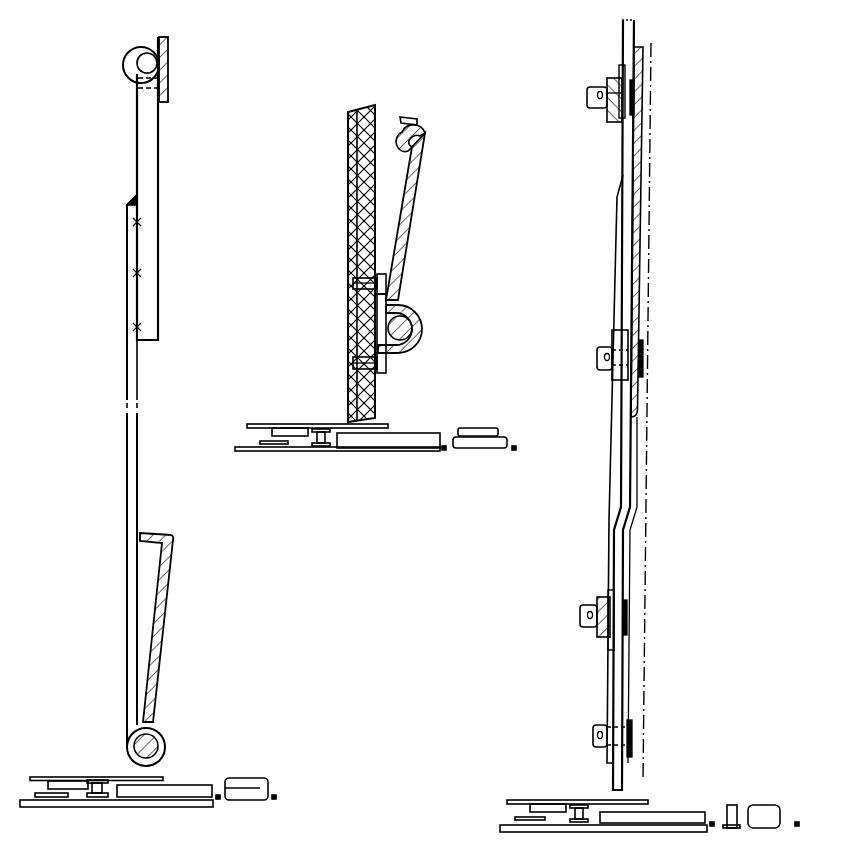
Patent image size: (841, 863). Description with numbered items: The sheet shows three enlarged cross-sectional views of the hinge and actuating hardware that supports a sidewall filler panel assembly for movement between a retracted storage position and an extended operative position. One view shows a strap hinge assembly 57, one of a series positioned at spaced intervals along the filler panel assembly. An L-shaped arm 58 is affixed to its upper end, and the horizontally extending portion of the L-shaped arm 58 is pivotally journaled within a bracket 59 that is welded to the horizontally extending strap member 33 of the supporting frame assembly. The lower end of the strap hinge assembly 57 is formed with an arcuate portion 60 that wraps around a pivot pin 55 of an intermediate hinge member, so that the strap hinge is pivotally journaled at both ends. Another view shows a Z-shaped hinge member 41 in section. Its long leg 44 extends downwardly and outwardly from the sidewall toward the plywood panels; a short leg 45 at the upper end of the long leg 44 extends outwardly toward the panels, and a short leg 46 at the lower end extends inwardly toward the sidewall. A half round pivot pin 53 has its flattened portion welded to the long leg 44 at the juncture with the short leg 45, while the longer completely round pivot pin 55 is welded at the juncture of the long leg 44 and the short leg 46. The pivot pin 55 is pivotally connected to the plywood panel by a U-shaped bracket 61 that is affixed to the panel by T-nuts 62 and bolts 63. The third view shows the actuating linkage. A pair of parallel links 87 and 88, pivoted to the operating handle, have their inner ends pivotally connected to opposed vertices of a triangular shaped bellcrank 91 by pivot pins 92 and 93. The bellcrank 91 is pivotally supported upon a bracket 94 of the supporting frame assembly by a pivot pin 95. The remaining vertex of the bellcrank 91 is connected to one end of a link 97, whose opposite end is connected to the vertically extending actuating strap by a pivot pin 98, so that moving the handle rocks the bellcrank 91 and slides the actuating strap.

In FIG. 6, the strap member 33 is at (168, 62).
In FIG. 6, the bracket 59 is at (129, 67).
In FIG. 6, the L-shaped arm 58 is at (148, 147).
In FIG. 6, the strap hinge assembly 57 is at (128, 380).
In FIG. 6, the arcuate portion 60 is at (158, 732).
In FIG. 6, the pivot pin 55 is at (159, 747).
In FIG. 5, the pivot pin 55 is at (404, 327).
In FIG. 5, the short leg 45 is at (409, 120).
In FIG. 5, the half round pivot pin 53 is at (416, 140).
In FIG. 5, the long leg 44 is at (442, 179).
In FIG. 5, the hinge member 41 is at (410, 222).
In FIG. 5, the T-nut 62 is at (352, 283).
In FIG. 5, the bolt 63 is at (387, 277).
In FIG. 5, the U-shaped bracket 61 is at (398, 308).
In FIG. 5, the short leg 46 is at (412, 347).
In FIG. 12, the pivot pin 92 is at (602, 90).
In FIG. 12, the parallel link 87 is at (610, 124).
In FIG. 12, the bracket 94 is at (634, 302).
In FIG. 12, the pivot pin 95 is at (605, 368).
In FIG. 12, the bellcrank 91 is at (628, 450).
In FIG. 12, the link 97 is at (615, 478).
In FIG. 12, the pivot pin 93 is at (580, 620).
In FIG. 12, the parallel link 88 is at (600, 638).
In FIG. 12, the pivot pin 98 is at (593, 745).